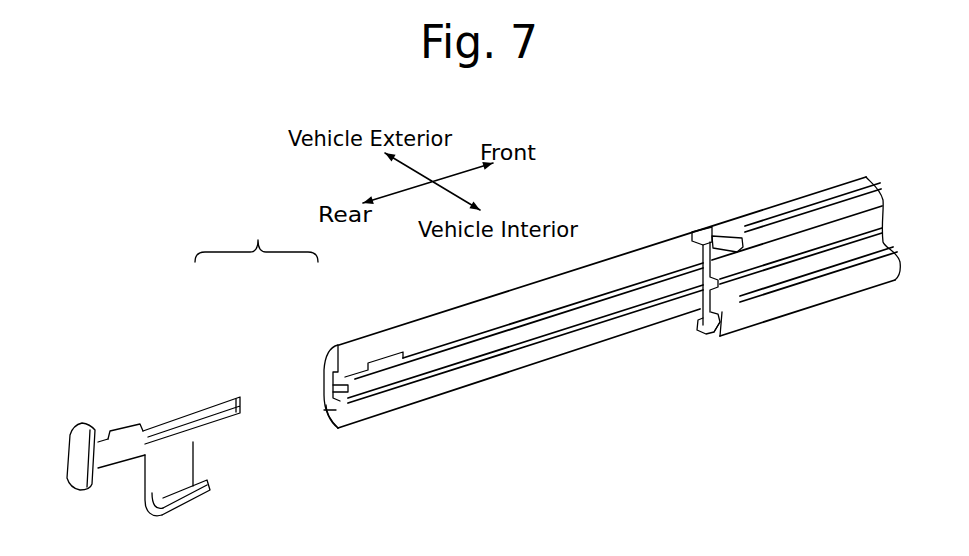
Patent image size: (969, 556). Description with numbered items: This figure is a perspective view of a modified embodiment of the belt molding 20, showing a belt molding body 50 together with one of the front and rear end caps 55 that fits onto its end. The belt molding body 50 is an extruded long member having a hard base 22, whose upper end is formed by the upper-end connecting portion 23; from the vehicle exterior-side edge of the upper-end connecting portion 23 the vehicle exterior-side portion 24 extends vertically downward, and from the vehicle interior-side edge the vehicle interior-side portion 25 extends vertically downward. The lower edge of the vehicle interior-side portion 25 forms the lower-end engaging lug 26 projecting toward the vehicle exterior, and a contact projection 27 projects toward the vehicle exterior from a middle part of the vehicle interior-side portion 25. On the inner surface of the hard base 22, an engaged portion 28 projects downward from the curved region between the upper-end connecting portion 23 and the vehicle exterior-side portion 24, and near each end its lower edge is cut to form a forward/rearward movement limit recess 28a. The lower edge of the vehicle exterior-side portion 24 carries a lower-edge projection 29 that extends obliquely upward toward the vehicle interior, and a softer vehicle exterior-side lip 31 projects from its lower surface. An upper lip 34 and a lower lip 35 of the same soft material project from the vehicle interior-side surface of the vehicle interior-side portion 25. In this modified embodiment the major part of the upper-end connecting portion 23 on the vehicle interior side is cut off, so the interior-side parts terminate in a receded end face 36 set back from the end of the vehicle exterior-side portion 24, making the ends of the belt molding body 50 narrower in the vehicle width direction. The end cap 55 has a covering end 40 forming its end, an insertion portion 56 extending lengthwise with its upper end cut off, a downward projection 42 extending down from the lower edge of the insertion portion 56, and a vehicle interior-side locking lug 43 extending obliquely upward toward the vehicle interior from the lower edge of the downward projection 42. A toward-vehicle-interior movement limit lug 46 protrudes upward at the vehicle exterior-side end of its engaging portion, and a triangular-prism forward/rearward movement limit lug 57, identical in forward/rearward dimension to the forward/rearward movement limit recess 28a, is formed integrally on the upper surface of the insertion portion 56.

The belt molding 20 is at (256, 234).
The hard base 22 is at (470, 302).
The upper-end connecting portion 23 is at (703, 293).
The vehicle exterior-side portion 24 is at (328, 374).
The vehicle interior-side portion 25 is at (777, 284).
The lower-end engaging lug 26 is at (700, 334).
The contact projection 27 is at (694, 278).
The engaged portion 28 is at (527, 301).
The forward/rearward movement limit recess 28a is at (387, 358).
The lower-edge projection 29 is at (338, 415).
The vehicle exterior-side lip 31 is at (463, 378).
The upper lip 34 is at (797, 230).
The lower lip 35 is at (845, 292).
The receded end face 36 is at (722, 330).
The covering end 40 is at (77, 448).
The downward projection 42 is at (152, 487).
The vehicle interior-side locking lug 43 is at (210, 502).
The toward-vehicle-interior movement limit lug 46 is at (178, 418).
The belt molding body 50 is at (337, 323).
The end cap 55 is at (193, 373).
The insertion portion 56 is at (240, 413).
The forward/rearward movement limit lug 57 is at (125, 435).